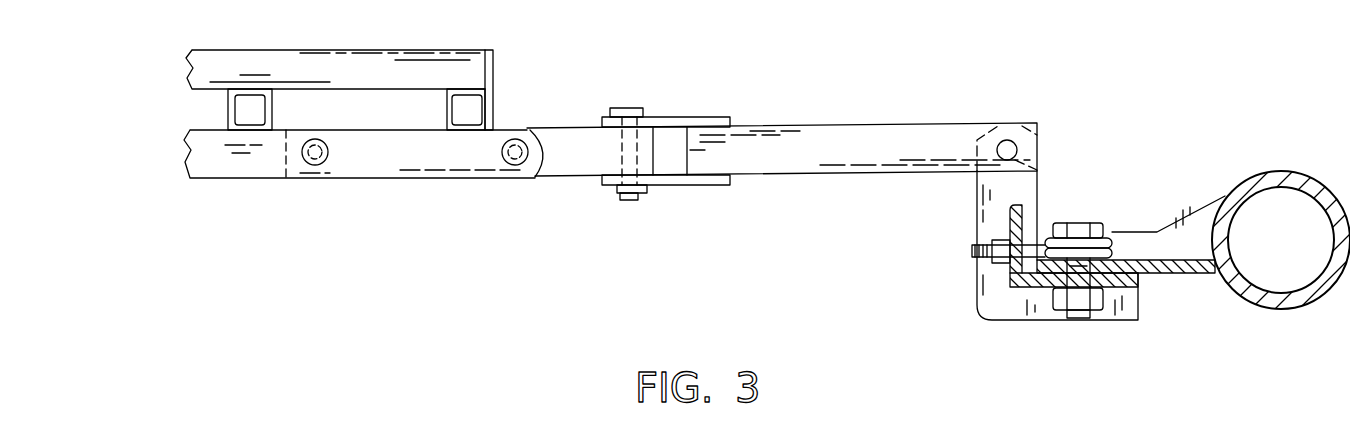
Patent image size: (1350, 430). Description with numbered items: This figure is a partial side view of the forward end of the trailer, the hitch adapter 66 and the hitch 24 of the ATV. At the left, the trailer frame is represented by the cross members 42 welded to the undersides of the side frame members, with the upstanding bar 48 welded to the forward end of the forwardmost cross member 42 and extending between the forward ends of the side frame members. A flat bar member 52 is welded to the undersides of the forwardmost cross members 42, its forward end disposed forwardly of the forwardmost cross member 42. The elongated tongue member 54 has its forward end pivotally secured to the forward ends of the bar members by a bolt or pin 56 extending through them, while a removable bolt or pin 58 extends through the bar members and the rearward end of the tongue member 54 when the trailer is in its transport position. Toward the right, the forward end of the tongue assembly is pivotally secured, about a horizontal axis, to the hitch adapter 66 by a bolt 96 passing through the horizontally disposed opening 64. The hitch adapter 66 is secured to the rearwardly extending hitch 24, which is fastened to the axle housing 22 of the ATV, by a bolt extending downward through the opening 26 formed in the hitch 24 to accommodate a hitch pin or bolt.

The axle housing 22 is at (1265, 180).
The hitch 24 is at (1188, 275).
The opening 26 is at (1103, 260).
The cross members 42 is at (447, 110).
The upstanding bar 48 is at (493, 52).
The flat bar member 52 is at (408, 160).
The tongue member 54 is at (577, 143).
The bolt or pin 56 is at (515, 164).
The removable bolt or pin 58 is at (313, 164).
The opening 64 is at (1037, 171).
The hitch adapter 66 is at (955, 215).
The bolt 96 is at (1008, 142).